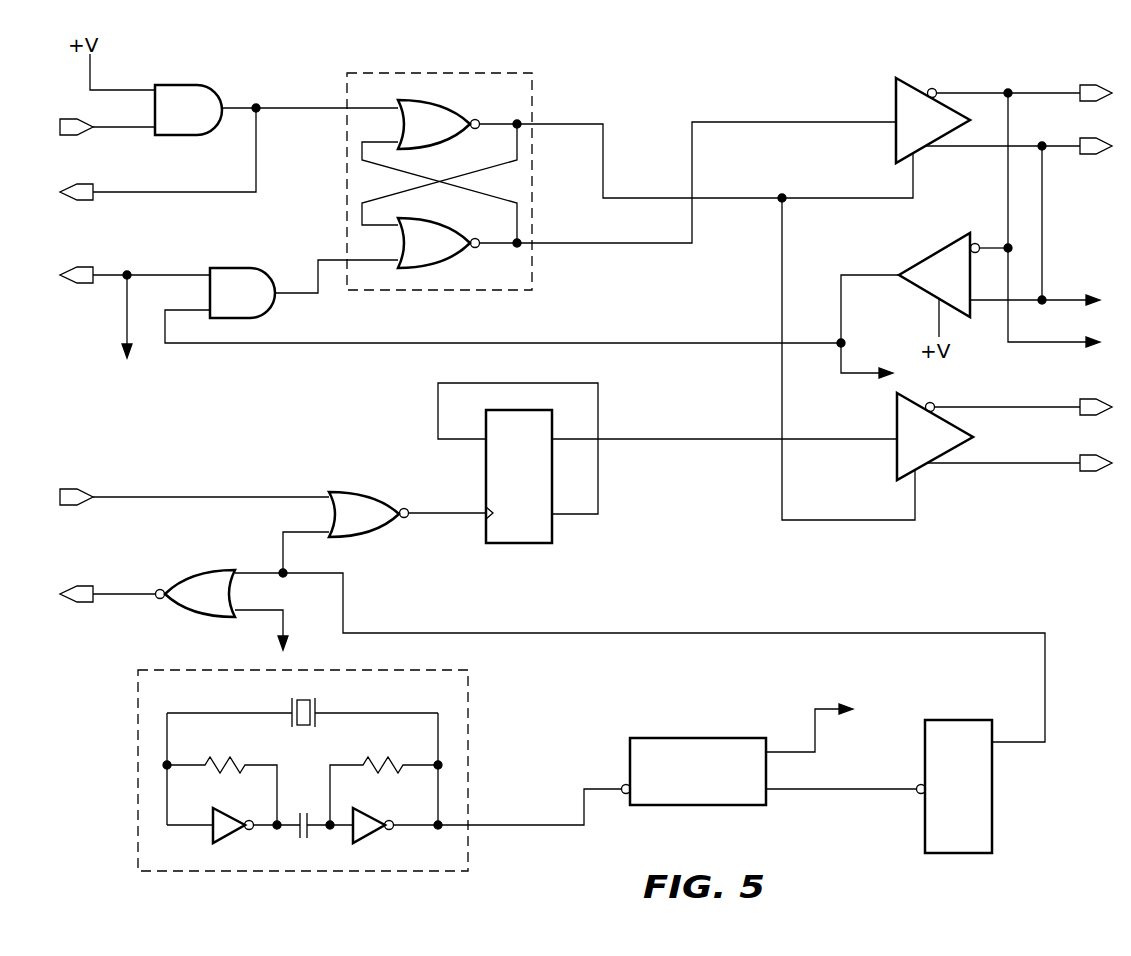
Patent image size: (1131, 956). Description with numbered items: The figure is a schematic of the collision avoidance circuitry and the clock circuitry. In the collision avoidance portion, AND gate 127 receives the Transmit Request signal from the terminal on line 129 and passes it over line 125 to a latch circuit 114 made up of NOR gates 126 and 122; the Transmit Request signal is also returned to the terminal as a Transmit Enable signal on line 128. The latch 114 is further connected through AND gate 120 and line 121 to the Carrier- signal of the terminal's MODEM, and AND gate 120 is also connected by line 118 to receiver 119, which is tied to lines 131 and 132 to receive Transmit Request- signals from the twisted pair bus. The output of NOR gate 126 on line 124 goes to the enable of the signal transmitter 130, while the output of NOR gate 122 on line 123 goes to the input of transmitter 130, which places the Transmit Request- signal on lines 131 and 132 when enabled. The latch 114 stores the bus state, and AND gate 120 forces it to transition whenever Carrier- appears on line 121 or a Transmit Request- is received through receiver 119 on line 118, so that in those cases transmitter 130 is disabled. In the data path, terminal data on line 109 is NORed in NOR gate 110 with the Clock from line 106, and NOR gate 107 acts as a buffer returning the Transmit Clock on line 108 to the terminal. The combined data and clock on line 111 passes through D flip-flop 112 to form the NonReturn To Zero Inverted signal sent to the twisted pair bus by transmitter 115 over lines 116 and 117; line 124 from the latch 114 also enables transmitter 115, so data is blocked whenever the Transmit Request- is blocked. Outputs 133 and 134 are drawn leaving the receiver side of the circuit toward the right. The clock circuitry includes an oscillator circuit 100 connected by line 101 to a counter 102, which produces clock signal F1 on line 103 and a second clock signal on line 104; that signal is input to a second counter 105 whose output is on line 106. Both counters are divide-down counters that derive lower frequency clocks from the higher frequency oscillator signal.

The oscillator circuit 100 is at (468, 736).
The line 101 is at (545, 803).
The counter 102 is at (694, 771).
The line 103 is at (829, 707).
The line 104 is at (834, 789).
The second counter 105 is at (955, 786).
The line 106 is at (1046, 694).
The NOR gate 107 is at (222, 609).
The line 108 is at (108, 594).
The line 109 is at (165, 497).
The NOR gate 110 is at (346, 532).
The line 111 is at (455, 497).
The D flip-flop 112 is at (667, 463).
The latch circuit 114 is at (531, 108).
The transmitter 115 is at (935, 436).
The line 116 is at (1020, 389).
The line 117 is at (1015, 463).
The line 118 is at (331, 325).
The receiver 119 is at (953, 275).
The AND gate 120 is at (242, 293).
The line 121 is at (103, 273).
The NOR gate 122 is at (439, 243).
The line 123 is at (553, 243).
The line 124 is at (570, 110).
The line 125 is at (281, 105).
The NOR gate 126 is at (439, 171).
The AND gate 127 is at (188, 110).
The line 128 is at (138, 170).
The line 129 is at (104, 126).
The signal transmitter 130 is at (933, 120).
The line 131 is at (1054, 75).
The line 132 is at (1062, 123).
The output line 133 is at (1060, 300).
The output line 134 is at (1028, 342).